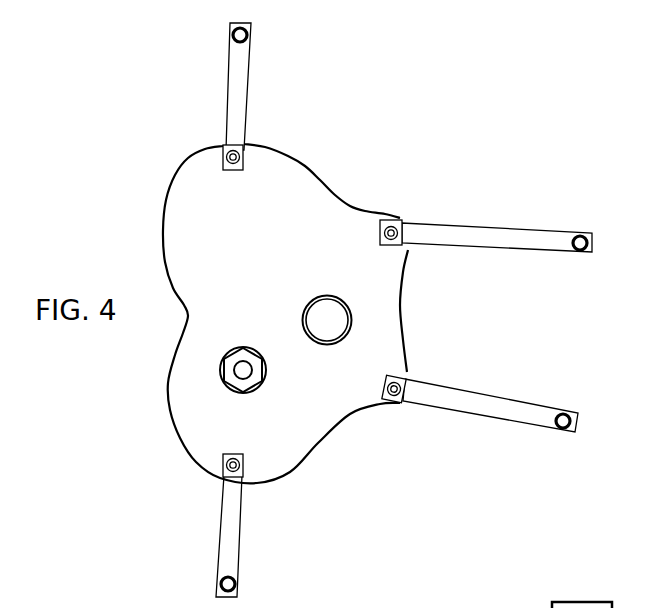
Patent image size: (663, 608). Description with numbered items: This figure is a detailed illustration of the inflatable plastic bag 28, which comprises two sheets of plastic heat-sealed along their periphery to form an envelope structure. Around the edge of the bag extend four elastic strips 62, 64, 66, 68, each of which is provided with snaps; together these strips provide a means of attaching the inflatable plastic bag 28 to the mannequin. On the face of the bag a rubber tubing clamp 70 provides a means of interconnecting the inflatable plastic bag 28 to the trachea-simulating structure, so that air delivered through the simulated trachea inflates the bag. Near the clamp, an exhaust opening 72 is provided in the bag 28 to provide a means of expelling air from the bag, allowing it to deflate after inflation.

The inflatable plastic bag 28 is at (319, 181).
The elastic strip 62 is at (237, 105).
The elastic strip 64 is at (233, 520).
The elastic strip 66 is at (457, 402).
The elastic strip 68 is at (472, 240).
The rubber tubing clamp 70 is at (266, 372).
The exhaust opening 72 is at (322, 338).